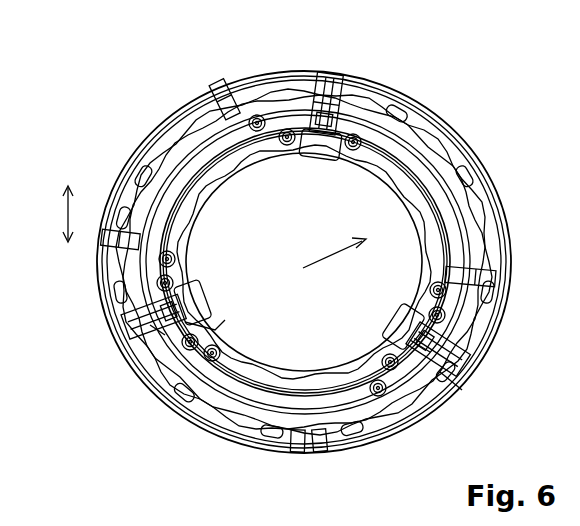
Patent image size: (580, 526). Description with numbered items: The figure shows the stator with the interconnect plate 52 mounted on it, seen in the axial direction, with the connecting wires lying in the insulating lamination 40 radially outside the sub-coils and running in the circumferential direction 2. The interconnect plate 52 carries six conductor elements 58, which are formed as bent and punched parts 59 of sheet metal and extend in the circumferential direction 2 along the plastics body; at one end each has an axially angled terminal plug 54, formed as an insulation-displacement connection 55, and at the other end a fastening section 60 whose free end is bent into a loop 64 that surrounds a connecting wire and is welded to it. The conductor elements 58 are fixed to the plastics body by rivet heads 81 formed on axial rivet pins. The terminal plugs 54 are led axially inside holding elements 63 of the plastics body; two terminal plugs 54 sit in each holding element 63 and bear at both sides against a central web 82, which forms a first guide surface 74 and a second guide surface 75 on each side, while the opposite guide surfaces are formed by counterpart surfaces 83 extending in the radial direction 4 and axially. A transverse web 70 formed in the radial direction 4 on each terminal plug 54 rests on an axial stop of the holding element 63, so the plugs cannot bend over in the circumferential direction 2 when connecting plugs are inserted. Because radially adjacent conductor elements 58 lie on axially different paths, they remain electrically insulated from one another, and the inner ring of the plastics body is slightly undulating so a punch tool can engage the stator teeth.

The circumferential direction 2 is at (62, 212).
The radial direction 4 is at (305, 268).
The insulating lamination 40 is at (198, 162).
The interconnect plate 52 is at (282, 93).
The terminal plug 54 is at (335, 100).
The insulation-displacement connection 55 is at (326, 104).
The conductor element 58 is at (433, 228).
The bent and punched part 59 is at (305, 262).
The fastening section 60 is at (400, 125).
The holding element 63 is at (463, 373).
The loop 64 is at (380, 402).
The transverse web 70 is at (333, 160).
The first guide surface 74 is at (130, 320).
The second guide surface 75 is at (185, 322).
The rivet head 81 is at (232, 105).
The central web 82 is at (470, 348).
The counterpart surface 83 is at (420, 345).